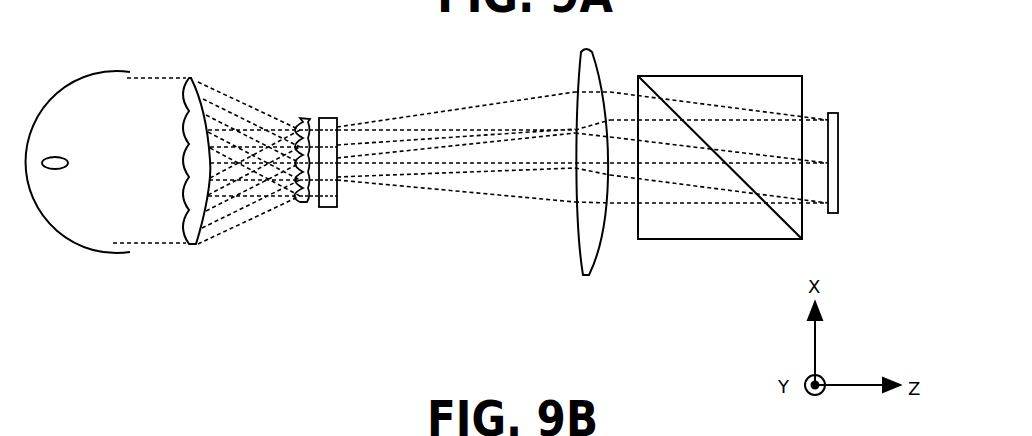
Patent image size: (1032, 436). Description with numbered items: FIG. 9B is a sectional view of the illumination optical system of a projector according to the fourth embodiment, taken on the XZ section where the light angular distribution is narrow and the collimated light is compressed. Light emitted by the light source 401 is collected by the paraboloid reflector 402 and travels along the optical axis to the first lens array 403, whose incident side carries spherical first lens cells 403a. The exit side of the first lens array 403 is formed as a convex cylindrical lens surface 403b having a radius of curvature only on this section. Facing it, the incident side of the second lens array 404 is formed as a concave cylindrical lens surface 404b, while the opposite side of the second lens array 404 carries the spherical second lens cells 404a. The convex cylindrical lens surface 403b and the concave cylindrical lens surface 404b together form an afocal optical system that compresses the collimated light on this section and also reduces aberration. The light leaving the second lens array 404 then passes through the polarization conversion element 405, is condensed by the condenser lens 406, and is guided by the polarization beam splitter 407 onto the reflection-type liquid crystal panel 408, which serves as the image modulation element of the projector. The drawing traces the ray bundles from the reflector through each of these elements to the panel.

The light source 401 is at (50, 168).
The paraboloid reflector 402 is at (85, 237).
The first lens array 403 is at (192, 246).
The first lens cell 403a is at (183, 124).
The cylindrical lens surface 403b is at (209, 133).
The second lens array 404 is at (300, 203).
The second lens cells 404a is at (310, 142).
The cylindrical lens surface 404b is at (298, 160).
The polarization conversion element 405 is at (330, 208).
The condenser lens 406 is at (581, 277).
The polarization beam splitter 407 is at (707, 228).
The reflection-type liquid crystal panel 408 is at (835, 214).